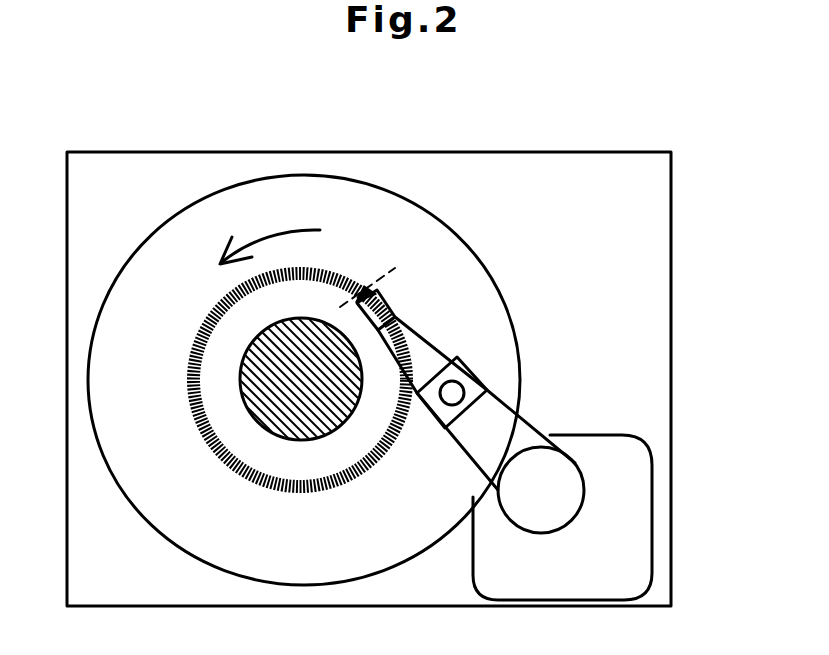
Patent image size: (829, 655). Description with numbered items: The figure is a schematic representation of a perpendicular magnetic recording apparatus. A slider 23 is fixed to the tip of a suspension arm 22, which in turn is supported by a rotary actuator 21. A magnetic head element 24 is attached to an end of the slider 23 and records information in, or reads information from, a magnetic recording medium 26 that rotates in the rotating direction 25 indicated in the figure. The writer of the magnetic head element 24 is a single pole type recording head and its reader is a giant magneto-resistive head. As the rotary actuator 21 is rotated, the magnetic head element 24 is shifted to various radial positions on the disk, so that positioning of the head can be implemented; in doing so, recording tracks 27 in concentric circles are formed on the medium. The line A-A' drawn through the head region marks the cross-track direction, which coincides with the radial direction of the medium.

The rotary actuator 21 is at (562, 505).
The suspension arm 22 is at (428, 353).
The slider 23 is at (383, 308).
The magnetic head element 24 is at (366, 292).
The rotating direction 25 is at (278, 228).
The magnetic recording medium 26 is at (155, 270).
The recording tracks 27 is at (290, 495).